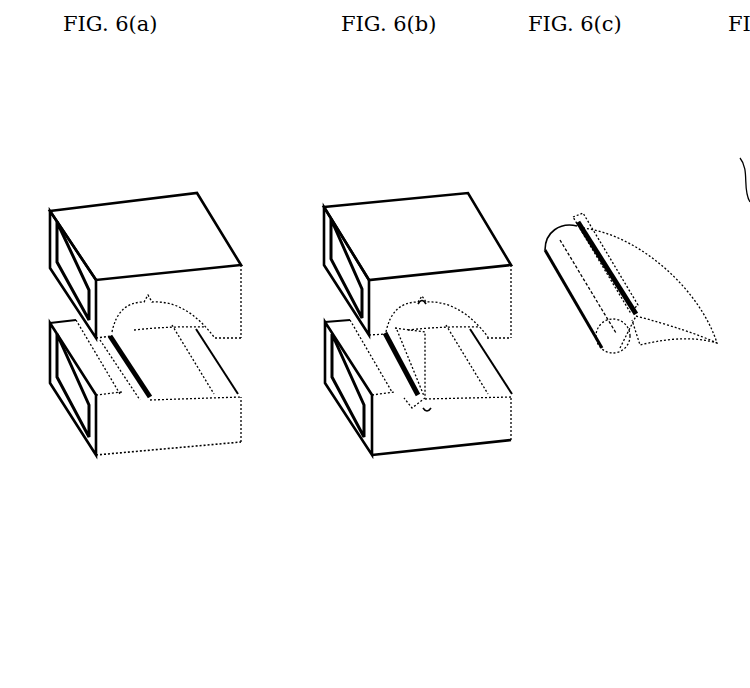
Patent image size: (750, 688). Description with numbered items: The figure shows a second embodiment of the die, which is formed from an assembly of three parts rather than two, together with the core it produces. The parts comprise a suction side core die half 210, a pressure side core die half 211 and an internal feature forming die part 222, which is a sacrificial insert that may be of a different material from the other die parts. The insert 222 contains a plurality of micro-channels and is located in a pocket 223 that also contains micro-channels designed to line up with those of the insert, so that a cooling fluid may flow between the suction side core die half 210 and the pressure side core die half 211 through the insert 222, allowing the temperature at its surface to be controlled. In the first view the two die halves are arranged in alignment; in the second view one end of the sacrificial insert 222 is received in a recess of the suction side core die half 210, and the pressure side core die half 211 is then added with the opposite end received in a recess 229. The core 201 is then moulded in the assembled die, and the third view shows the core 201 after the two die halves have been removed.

In FIG. 6C, the core 201 is at (658, 214).
In FIG. 6A, the suction side core die half 210 is at (157, 228).
In FIG. 6B, the suction side core die half 210 is at (368, 237).
In FIG. 6A, the pressure side core die half 211 is at (143, 440).
In FIG. 6B, the pressure side core die half 211 is at (405, 446).
In FIG. 6B, the internal feature forming die part 222 is at (427, 370).
In FIG. 6C, the internal feature forming die part 222 is at (634, 345).
In FIG. 6A, the pocket 223 is at (150, 403).
In FIG. 6B, the recess 229 is at (427, 303).